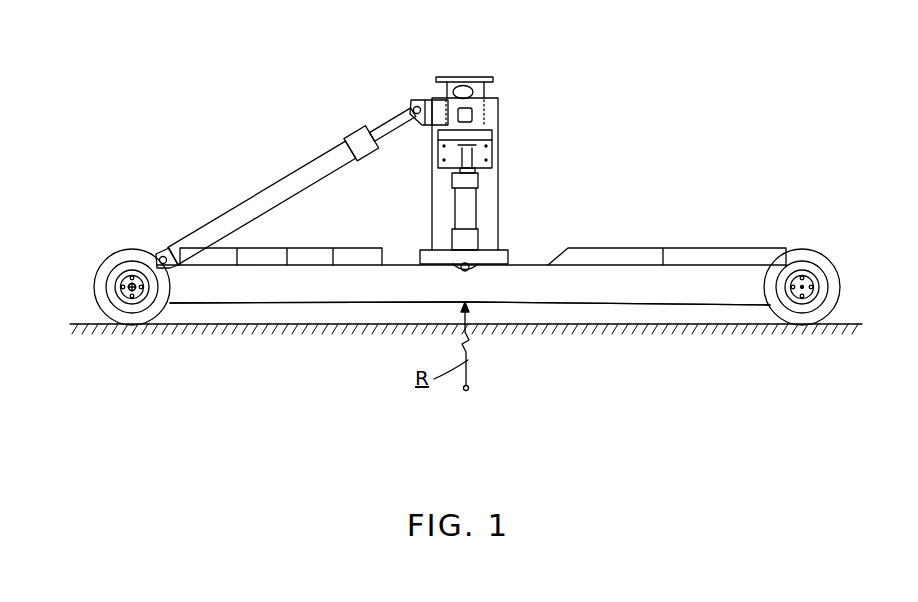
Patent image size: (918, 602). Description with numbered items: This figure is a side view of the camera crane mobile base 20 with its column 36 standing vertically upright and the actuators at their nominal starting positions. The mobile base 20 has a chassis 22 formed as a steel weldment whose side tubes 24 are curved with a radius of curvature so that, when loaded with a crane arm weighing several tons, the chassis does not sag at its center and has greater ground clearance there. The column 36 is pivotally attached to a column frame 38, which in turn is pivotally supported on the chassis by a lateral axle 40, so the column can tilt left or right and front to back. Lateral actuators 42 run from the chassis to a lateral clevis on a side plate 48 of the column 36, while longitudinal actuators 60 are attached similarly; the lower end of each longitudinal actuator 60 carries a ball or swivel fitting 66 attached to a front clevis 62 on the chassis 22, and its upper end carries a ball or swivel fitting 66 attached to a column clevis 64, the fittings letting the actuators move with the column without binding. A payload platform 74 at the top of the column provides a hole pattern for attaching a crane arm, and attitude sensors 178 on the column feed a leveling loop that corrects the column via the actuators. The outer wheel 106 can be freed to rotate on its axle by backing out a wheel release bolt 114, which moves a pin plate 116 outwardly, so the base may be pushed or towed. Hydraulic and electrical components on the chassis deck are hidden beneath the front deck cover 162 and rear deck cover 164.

The mobile base 20 is at (582, 199).
The chassis 22 is at (696, 280).
The side tubes 24 is at (652, 295).
The column 36 is at (487, 202).
The column frame 38 is at (510, 253).
The lateral axle 40 is at (469, 279).
The lateral actuators 42 is at (462, 217).
The side plate 48 is at (496, 149).
The longitudinal actuators 60 is at (260, 202).
The front clevis 62 is at (162, 252).
The column clevis 64 is at (417, 100).
The ball or swivel fitting 66 is at (408, 130).
The payload platform 74 is at (465, 76).
The outer wheel 106 is at (123, 260).
The wheel release bolt 114 is at (125, 288).
The pin plate 116 is at (138, 305).
The front deck cover 162 is at (286, 248).
The rear deck cover 164 is at (772, 248).
The attitude sensors 178 is at (475, 113).